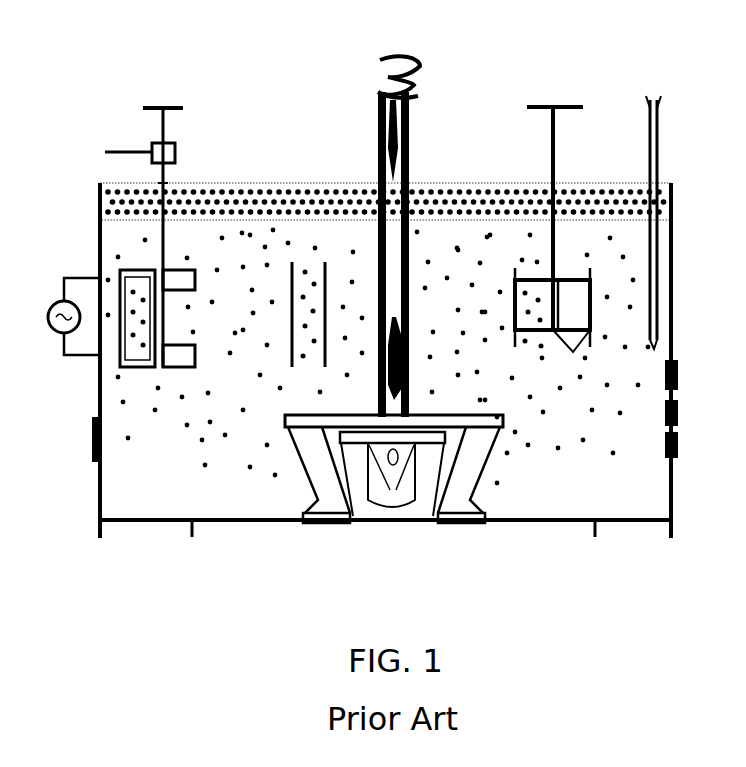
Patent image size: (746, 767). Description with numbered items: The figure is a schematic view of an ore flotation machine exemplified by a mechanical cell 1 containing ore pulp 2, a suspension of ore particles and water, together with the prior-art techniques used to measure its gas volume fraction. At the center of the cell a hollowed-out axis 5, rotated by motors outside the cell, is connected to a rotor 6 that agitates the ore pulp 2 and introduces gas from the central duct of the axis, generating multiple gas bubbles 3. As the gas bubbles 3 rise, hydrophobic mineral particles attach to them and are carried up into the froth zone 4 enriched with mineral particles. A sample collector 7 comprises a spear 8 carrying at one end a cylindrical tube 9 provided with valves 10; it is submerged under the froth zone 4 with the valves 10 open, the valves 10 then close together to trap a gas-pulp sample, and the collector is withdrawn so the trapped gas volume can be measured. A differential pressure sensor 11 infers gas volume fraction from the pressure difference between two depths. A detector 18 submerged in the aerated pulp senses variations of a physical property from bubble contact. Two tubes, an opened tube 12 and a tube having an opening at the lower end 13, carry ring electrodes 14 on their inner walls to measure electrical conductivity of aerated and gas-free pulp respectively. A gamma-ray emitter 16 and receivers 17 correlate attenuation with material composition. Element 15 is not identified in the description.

The mechanical cell 1 is at (178, 570).
The ore pulp 2 is at (540, 490).
The gas bubbles 3 is at (250, 468).
The froth zone 4 is at (249, 183).
The hollowed-out axis 5 is at (413, 132).
The rotor 6 is at (372, 505).
The sample collector 7 is at (155, 105).
The spear 8 is at (170, 178).
The cylindrical tube 9 is at (120, 270).
The valves 10 is at (195, 275).
The differential pressure sensor 11 is at (55, 318).
The opened tube 12 is at (513, 283).
The tube having an opening at the lower end 13 is at (594, 296).
The electrodes in the form of rings 14 is at (576, 298).
The reference electrode 15 is at (326, 298).
The gamma-ray emitter 16 is at (646, 146).
The receivers 17 is at (680, 410).
The detector 18 is at (92, 428).